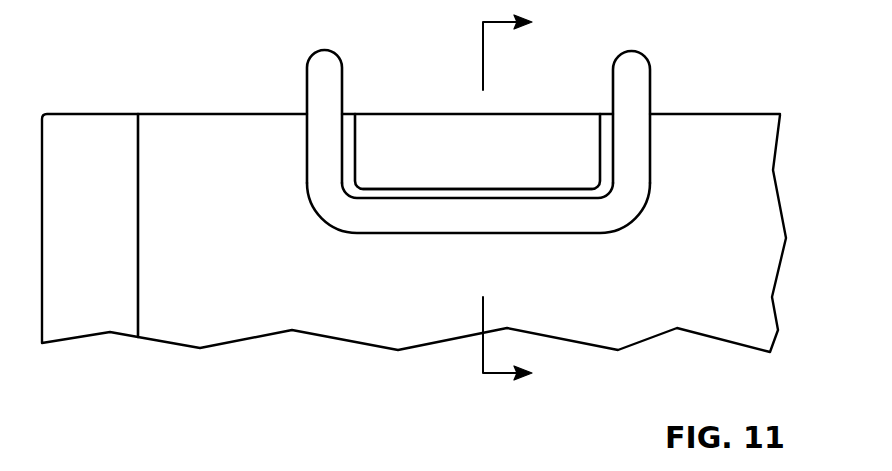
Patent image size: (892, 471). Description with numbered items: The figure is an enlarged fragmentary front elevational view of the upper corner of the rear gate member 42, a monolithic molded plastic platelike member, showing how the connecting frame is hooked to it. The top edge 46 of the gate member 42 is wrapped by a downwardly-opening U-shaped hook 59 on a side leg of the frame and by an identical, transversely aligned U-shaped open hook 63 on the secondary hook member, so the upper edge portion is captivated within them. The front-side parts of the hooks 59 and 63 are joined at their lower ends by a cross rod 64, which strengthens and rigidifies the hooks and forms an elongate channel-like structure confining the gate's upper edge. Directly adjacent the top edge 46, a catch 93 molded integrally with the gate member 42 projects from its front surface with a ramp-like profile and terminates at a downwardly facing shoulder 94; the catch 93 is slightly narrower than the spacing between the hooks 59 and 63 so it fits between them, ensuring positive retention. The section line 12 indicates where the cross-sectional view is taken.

The section line 12- 12 is at (533, 202).
The rear gate member 42 is at (773, 297).
The top edge 46 is at (702, 114).
The U-shaped hook 59 is at (322, 152).
The U-shaped open hook 63 is at (630, 153).
The cross rod 64 is at (519, 220).
The catch 93 is at (408, 140).
The shoulder 94 is at (427, 190).